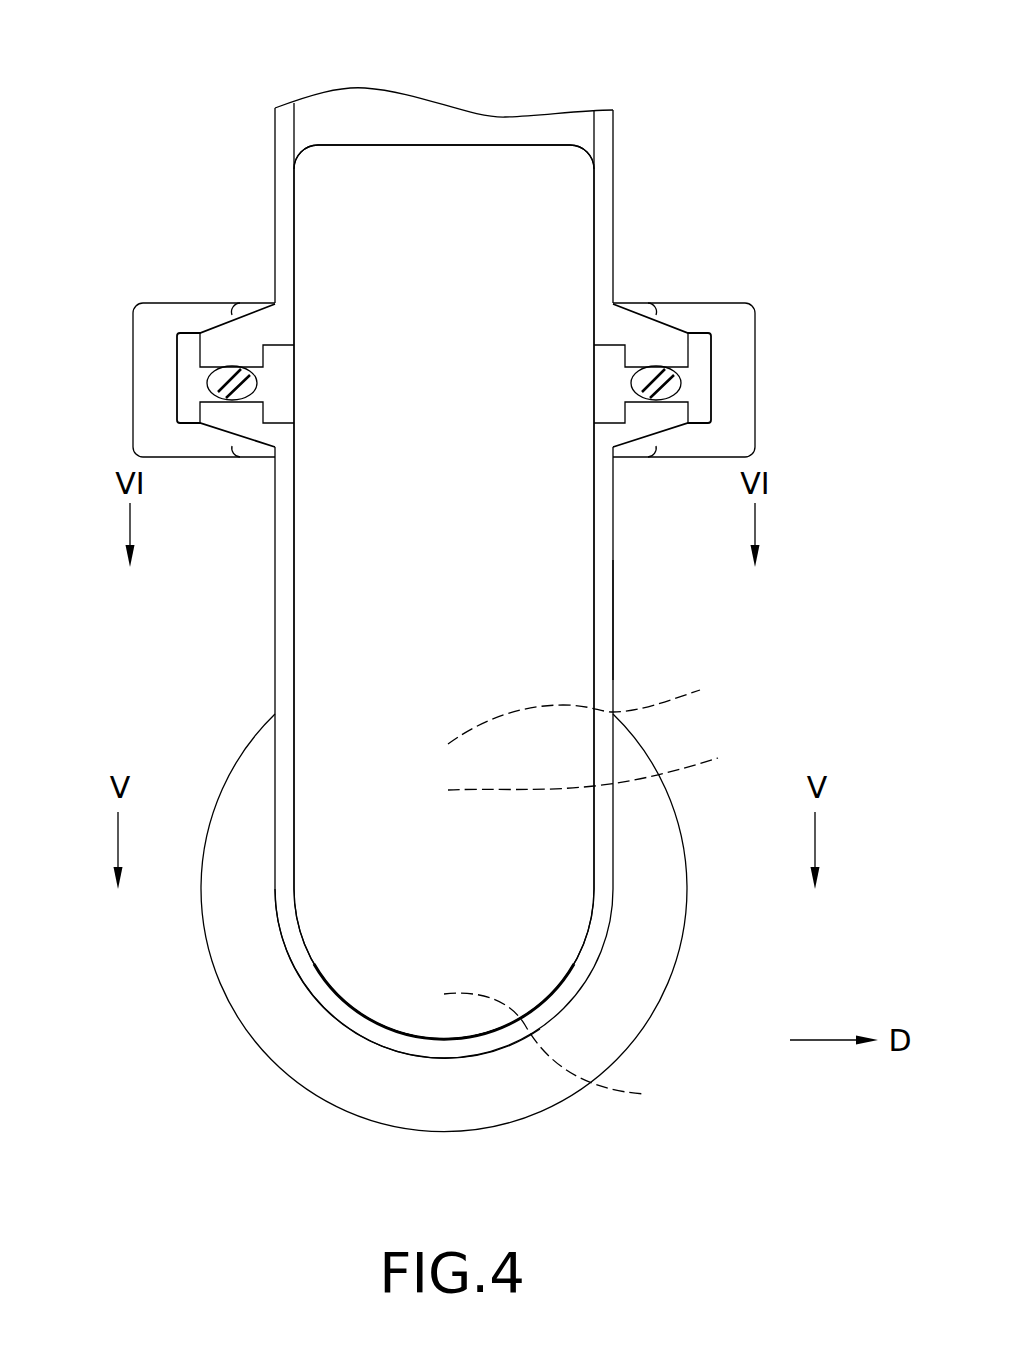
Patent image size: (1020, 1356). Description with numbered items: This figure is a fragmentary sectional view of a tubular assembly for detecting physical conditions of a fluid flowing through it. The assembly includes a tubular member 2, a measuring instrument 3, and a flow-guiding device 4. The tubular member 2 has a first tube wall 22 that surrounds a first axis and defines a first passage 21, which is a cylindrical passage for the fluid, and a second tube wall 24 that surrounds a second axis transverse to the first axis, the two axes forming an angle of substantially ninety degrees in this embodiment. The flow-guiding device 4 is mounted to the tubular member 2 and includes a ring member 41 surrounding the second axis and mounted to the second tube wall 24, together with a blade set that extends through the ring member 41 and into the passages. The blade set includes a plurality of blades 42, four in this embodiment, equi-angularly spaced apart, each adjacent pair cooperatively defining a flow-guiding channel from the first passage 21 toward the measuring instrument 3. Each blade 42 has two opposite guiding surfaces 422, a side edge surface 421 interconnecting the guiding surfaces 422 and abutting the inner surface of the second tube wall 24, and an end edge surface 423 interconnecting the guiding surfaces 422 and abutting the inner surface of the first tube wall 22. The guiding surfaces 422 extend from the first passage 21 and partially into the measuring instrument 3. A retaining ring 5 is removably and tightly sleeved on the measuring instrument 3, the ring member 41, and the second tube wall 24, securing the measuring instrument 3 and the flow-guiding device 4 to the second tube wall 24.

The tubular member 2 is at (220, 803).
The first passage 21 is at (310, 965).
The first tube wall 22 is at (418, 1057).
The second tube wall 24 is at (613, 617).
The measuring instrument 3 is at (613, 218).
The flow-guiding device 4 is at (335, 145).
The ring member 41 is at (683, 375).
The blades 42 is at (385, 145).
The side edge surface 421 is at (292, 628).
The guiding surfaces 422 is at (378, 672).
The end edge surface 423 is at (352, 980).
The retaining ring 5 is at (135, 302).